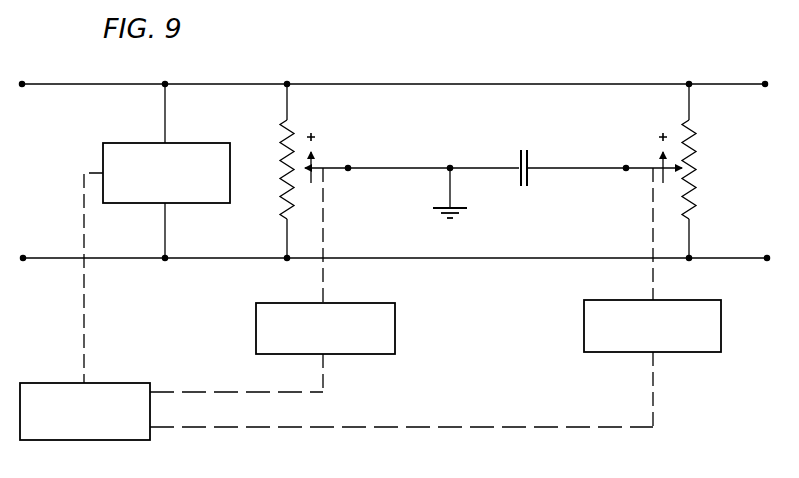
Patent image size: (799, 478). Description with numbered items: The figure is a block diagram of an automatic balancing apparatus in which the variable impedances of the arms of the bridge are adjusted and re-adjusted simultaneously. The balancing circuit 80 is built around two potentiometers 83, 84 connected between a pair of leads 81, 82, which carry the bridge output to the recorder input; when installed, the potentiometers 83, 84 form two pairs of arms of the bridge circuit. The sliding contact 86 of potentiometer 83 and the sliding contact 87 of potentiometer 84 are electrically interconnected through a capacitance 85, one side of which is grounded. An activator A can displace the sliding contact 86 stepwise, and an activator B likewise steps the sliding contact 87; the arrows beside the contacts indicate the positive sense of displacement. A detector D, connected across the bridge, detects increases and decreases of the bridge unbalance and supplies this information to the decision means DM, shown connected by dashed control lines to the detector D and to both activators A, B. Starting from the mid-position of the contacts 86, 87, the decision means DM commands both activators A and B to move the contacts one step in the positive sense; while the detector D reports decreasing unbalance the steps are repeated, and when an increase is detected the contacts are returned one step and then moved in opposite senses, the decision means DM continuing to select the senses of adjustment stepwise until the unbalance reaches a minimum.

The balancing circuit 80 is at (505, 39).
The lead 81 is at (400, 82).
The lead 82 is at (55, 260).
The potentiometer 83 is at (281, 131).
The potentiometer 84 is at (693, 131).
The capacitance 85 is at (528, 160).
The sliding contact 86 is at (338, 168).
The sliding contact 87 is at (640, 170).
The detector D is at (103, 148).
The decision means DM is at (127, 383).
The activator A is at (397, 336).
The activator B is at (723, 331).